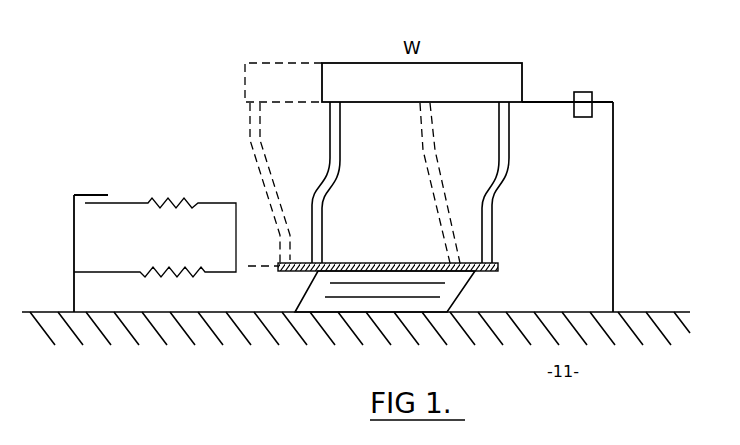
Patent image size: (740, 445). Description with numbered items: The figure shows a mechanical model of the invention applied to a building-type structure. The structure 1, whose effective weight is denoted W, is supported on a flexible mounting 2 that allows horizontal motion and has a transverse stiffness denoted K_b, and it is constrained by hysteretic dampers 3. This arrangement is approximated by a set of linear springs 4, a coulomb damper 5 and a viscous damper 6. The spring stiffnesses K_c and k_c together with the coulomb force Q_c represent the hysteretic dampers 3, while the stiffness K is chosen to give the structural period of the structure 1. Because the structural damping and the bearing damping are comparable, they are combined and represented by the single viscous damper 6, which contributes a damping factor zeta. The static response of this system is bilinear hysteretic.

The structure 1 is at (574, 158).
The flexible mounting 2 is at (427, 322).
The hysteretic dampers 3 is at (141, 180).
The linear springs 4 is at (499, 165).
The coulomb damper 5 is at (74, 195).
The viscous damper 6 is at (588, 100).